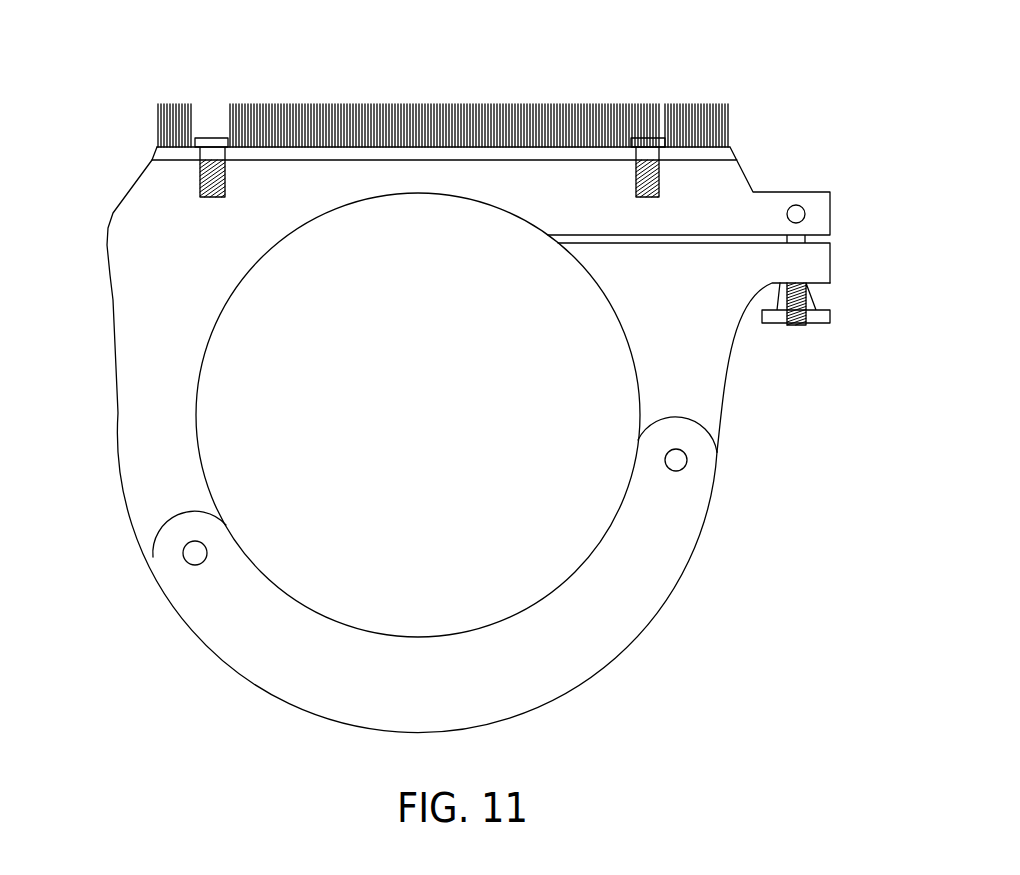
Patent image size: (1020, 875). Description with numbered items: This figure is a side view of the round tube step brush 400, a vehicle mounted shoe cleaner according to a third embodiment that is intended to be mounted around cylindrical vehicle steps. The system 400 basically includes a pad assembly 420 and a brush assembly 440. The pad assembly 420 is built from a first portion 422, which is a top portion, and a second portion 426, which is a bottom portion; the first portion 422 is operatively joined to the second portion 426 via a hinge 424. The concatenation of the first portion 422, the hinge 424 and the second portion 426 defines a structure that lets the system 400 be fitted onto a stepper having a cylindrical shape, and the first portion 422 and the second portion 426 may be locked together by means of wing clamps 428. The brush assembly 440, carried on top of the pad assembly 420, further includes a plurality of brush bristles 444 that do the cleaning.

The round tube step brush 400 is at (464, 374).
The pad assembly 420 is at (464, 440).
The first portion 422 is at (145, 477).
The hinge 424 is at (652, 568).
The second portion 426 is at (710, 360).
The wing clamps 428 is at (830, 318).
The brush assembly 440 is at (446, 106).
The brush bristles 444 is at (256, 110).